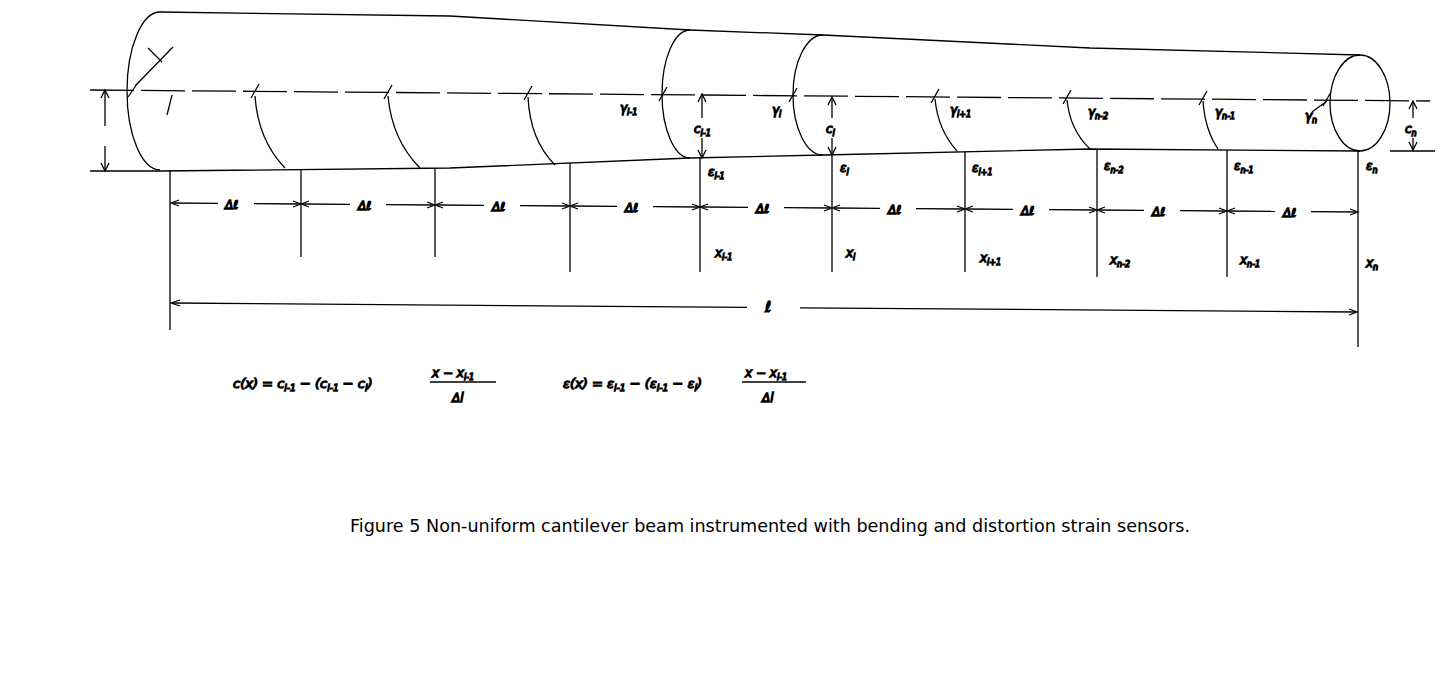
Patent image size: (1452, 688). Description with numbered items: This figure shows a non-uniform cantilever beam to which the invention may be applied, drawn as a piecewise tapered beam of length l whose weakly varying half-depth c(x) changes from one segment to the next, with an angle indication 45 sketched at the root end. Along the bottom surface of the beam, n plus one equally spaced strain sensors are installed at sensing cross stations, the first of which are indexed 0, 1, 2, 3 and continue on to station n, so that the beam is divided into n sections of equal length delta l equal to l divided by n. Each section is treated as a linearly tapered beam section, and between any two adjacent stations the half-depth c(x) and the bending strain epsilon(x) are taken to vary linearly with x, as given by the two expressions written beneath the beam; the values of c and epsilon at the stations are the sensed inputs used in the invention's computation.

The 45 degree orientation of distortion strain sensor 45 is at (155, 66).
The sensor station 0 at root (γ0, ε0, x0) 0 is at (162, 207).
The sensor station 1 (γ1, ε1, x1) 1 is at (289, 170).
The sensor station 2 (γ2, ε2, x2) 2 is at (423, 171).
The sensor station 3 (γ3, ε3, x3) 3 is at (560, 179).